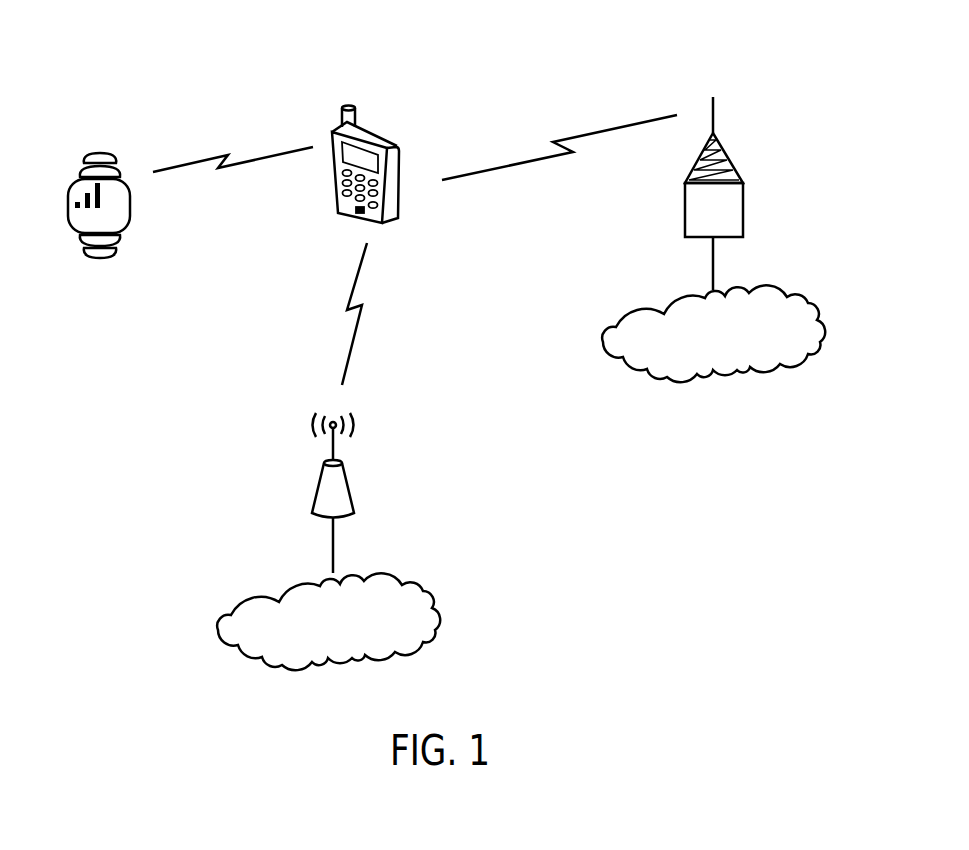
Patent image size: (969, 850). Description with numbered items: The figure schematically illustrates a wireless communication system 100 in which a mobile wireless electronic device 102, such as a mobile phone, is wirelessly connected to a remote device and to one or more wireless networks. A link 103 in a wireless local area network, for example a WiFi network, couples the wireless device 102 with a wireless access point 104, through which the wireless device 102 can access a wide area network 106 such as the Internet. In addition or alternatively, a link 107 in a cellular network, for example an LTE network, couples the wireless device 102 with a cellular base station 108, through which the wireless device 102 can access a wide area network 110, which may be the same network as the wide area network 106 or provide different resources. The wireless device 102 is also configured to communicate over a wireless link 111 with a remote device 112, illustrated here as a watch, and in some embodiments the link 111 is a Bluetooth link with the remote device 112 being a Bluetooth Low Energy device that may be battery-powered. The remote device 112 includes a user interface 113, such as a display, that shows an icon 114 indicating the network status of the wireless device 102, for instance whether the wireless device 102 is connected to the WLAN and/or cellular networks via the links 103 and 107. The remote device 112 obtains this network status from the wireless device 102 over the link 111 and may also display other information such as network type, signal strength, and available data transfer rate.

The wireless communication system 100 is at (172, 38).
The mobile wireless electronic device 102 is at (400, 143).
The link 103 is at (363, 268).
The wireless access point 104 is at (348, 483).
The wide area network 106 is at (420, 585).
The link 107 is at (503, 167).
The cellular base station 108 is at (728, 157).
The wide area network 110 is at (807, 298).
The wireless link 111 is at (240, 163).
The remote device 112 is at (107, 153).
The user interface 113 is at (85, 222).
The icon 114 is at (82, 190).